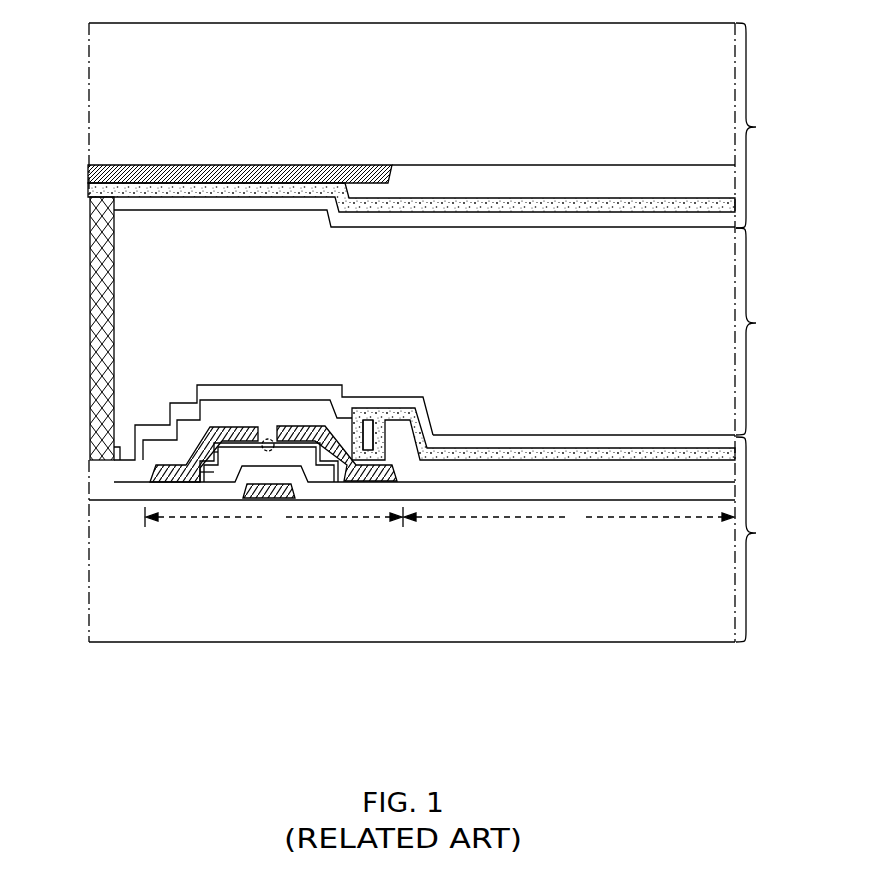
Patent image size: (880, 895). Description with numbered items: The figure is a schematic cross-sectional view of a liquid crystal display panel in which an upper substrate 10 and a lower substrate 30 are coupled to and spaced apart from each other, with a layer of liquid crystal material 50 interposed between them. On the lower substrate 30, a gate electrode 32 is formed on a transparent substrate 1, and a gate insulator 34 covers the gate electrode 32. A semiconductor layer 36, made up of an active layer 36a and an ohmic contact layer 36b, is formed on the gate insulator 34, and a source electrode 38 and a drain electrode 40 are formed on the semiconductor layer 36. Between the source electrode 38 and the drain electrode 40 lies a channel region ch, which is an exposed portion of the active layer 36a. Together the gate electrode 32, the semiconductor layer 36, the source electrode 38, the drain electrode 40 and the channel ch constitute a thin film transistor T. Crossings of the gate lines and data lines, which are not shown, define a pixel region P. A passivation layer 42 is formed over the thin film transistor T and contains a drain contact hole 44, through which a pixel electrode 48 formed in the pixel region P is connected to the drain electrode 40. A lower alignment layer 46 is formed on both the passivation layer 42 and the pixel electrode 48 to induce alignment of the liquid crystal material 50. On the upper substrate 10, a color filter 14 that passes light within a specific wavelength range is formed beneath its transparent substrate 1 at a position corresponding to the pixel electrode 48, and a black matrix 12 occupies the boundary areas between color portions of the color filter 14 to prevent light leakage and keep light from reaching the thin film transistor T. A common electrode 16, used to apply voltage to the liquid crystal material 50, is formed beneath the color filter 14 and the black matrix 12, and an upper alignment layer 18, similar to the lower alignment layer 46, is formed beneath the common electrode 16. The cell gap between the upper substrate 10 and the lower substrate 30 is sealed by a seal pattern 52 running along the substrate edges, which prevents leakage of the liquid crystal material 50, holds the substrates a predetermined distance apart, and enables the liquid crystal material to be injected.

The transparent substrate 1 is at (422, 106).
The upper substrate 10 is at (768, 125).
The black matrix 12 is at (283, 165).
The color filter 14 is at (538, 165).
The common electrode 16 is at (447, 212).
The upper alignment layer 18 is at (484, 227).
The lower substrate 30 is at (443, 539).
The gate electrode 32 is at (291, 499).
The gate insulator 34 is at (360, 483).
The semiconductor layer 36 is at (237, 583).
The active layer 36a is at (205, 472).
The ohmic contact layer 36b is at (220, 460).
The source electrode 38 is at (240, 427).
The drain electrode 40 is at (300, 426).
The passivation layer 42 is at (330, 386).
The drain contact hole 44 is at (373, 384).
The lower alignment layer 46 is at (548, 435).
The pixel electrode 48 is at (490, 448).
The layer of liquid crystal material 50 is at (767, 331).
The seal pattern 52 is at (90, 308).
The channel region ch is at (268, 439).
The thin film transistor T is at (274, 516).
The pixel region P is at (569, 514).